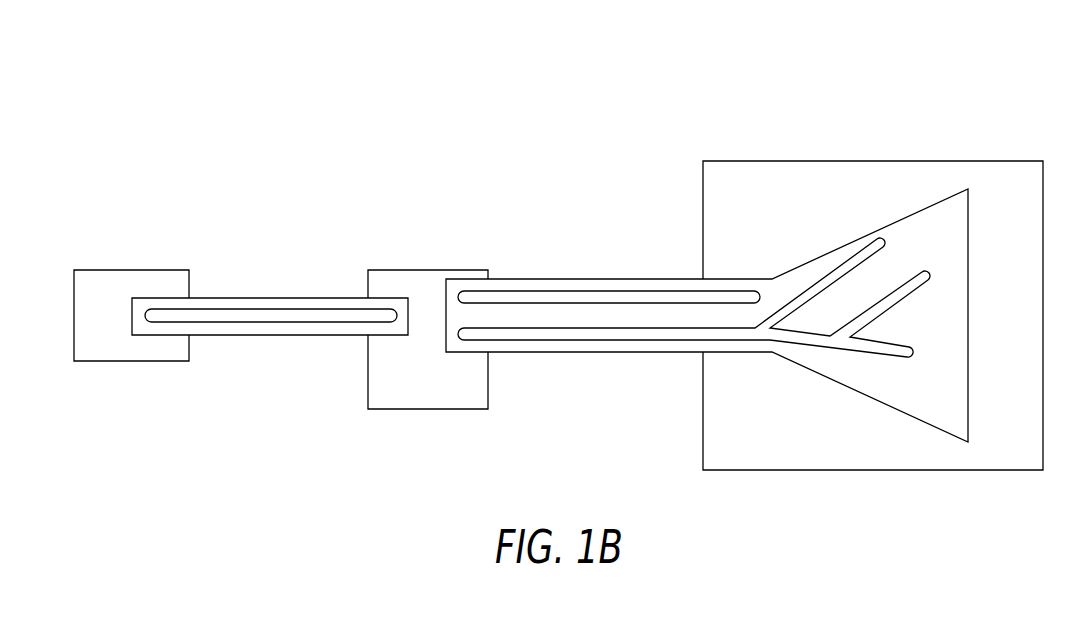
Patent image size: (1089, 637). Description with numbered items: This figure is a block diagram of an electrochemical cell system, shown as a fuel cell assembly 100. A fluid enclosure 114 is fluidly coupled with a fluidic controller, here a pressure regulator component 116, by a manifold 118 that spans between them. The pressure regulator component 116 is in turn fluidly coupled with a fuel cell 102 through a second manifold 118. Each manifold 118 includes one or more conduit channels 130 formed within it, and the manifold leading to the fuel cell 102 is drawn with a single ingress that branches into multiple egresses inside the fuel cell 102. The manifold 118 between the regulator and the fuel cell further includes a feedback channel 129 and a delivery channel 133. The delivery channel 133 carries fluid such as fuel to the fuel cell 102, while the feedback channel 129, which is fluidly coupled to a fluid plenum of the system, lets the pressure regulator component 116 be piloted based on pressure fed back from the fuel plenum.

The fuel cell assembly 100 is at (191, 54).
The fuel cell 102 is at (872, 160).
The fluid enclosure 114 is at (133, 270).
The pressure regulator component 116 is at (428, 270).
The manifold 118 is at (270, 297).
The feedback channel 129 is at (535, 288).
The conduit channel 130 is at (272, 322).
The delivery channel 133 is at (535, 340).